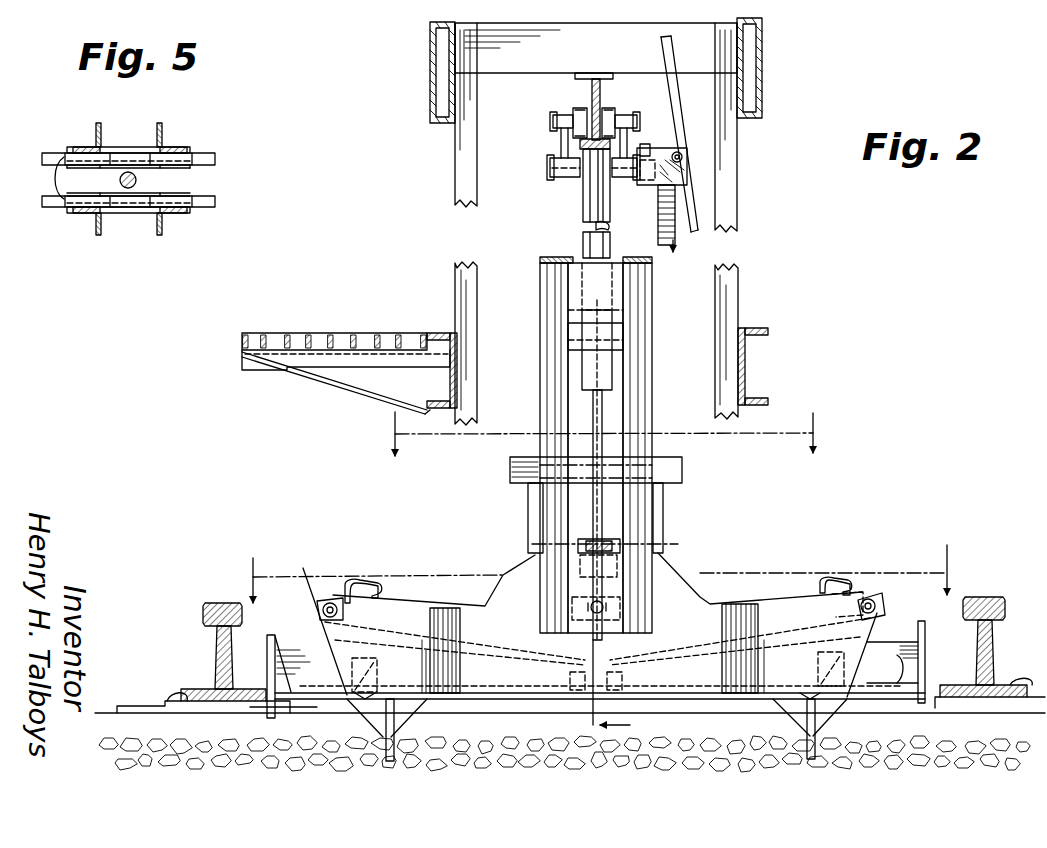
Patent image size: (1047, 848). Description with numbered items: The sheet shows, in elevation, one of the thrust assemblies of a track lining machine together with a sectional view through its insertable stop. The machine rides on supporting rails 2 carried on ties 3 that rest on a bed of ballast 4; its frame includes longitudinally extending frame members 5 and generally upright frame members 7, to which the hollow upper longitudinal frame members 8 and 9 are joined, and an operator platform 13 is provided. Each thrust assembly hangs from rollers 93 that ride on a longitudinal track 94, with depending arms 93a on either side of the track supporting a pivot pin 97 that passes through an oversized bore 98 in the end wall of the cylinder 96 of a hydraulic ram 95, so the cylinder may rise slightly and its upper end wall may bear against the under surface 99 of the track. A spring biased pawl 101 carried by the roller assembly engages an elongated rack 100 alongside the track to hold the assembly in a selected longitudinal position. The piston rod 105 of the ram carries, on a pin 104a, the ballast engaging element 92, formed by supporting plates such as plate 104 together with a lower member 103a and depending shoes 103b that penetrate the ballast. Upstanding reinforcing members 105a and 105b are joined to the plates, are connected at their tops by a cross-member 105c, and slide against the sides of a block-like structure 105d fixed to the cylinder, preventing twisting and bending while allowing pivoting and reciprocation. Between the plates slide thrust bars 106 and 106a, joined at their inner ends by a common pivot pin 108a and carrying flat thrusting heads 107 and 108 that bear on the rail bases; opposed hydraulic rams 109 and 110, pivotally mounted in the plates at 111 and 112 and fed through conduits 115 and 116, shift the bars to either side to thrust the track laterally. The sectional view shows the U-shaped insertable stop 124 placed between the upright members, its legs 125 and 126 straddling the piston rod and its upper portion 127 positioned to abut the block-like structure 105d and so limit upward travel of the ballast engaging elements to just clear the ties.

In FIG. 2, the supporting rails 2 is at (203, 607).
In FIG. 2, the ties 3 is at (134, 712).
In FIG. 2, the ballast 4 is at (620, 545).
In FIG. 2, the longitudinally extending frame members 5 is at (788, 320).
In FIG. 2, the upright frame members 7 is at (455, 184).
In FIG. 2, the upper longitudinally extending frame member 8 is at (762, 68).
In FIG. 2, the upper longitudinally extending frame member 9 is at (430, 78).
In FIG. 2, the operator platform 13 is at (292, 337).
In FIG. 2, the ballast engaging element 92 is at (437, 606).
In FIG. 2, the rollers 93 is at (573, 112).
In FIG. 2, the depending arms 93a is at (570, 156).
In FIG. 2, the track 94 is at (592, 86).
In FIG. 2, the hydraulic ram 95 is at (612, 208).
In FIG. 2, the cylinder 96 is at (612, 240).
In FIG. 2, the pivot pin 97 is at (570, 178).
In FIG. 2, the bore 98 is at (594, 168).
In FIG. 2, the under surface of the track 99 is at (553, 122).
In FIG. 2, the rack 100 is at (640, 147).
In FIG. 2, the pawl 101 is at (657, 146).
In FIG. 2, the lower member 103a is at (685, 700).
In FIG. 2, the shoes 103b is at (437, 705).
In FIG. 2, the supporting plate 104 is at (406, 607).
In FIG. 2, the pin 104a is at (590, 606).
In FIG. 5, the piston rod 105 is at (137, 181).
In FIG. 2, the piston rod 105 is at (604, 410).
In FIG. 5, the upstanding reinforcing member 105a is at (162, 125).
In FIG. 2, the upstanding reinforcing member 105a is at (643, 373).
In FIG. 5, the upstanding reinforcing member 105b is at (96, 125).
In FIG. 2, the upstanding reinforcing member 105b is at (540, 379).
In FIG. 2, the cross-member 105c is at (575, 256).
In FIG. 2, the block-like structure 105d is at (615, 325).
In FIG. 2, the thrust bar 106 is at (893, 675).
In FIG. 2, the thrust bar 106a is at (308, 692).
In FIG. 2, the thrusting head 107 is at (930, 598).
In FIG. 2, the thrusting head 108 is at (275, 641).
In FIG. 2, the common pivot pin 108a is at (570, 694).
In FIG. 2, the hydraulic ram 109 is at (768, 612).
In FIG. 2, the hydraulic ram 110 is at (332, 626).
In FIG. 2, the pivotal mounting 111 is at (874, 598).
In FIG. 2, the pivotal mounting 112 is at (312, 620).
In FIG. 2, the conduit 115 is at (833, 580).
In FIG. 2, the conduit 116 is at (362, 580).
In FIG. 5, the insertable stop 124 is at (133, 214).
In FIG. 2, the insertable stop 124 is at (528, 512).
In FIG. 5, the leg of the stop 125 is at (190, 148).
In FIG. 5, the leg of the stop 126 is at (190, 212).
In FIG. 2, the leg of the stop 126 is at (656, 510).
In FIG. 5, the upper portion of the stop 127 is at (215, 200).
In FIG. 2, the upper portion of the stop 127 is at (680, 460).